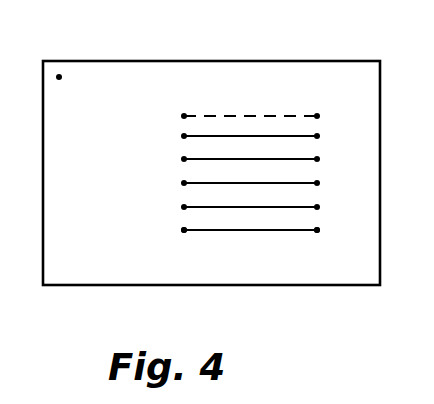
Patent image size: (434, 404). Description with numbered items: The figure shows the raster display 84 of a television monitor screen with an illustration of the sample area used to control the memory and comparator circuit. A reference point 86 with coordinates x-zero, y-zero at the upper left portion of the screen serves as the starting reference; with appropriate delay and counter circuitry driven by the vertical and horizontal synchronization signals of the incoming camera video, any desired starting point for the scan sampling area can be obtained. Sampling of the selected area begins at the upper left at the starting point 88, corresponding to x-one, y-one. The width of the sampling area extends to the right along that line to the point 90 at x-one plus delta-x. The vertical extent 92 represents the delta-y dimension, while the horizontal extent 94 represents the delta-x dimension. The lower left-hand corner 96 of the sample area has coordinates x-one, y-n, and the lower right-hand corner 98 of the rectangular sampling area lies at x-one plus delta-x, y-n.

The raster display 84 is at (75, 61).
The reference point 86 is at (59, 77).
The starting point 88 is at (182, 116).
The point 90 is at (317, 116).
The vertical extent 92 is at (127, 125).
The horizontal extent 94 is at (183, 240).
The lower left-hand corner 96 is at (184, 231).
The lower right-hand corner 98 is at (317, 230).